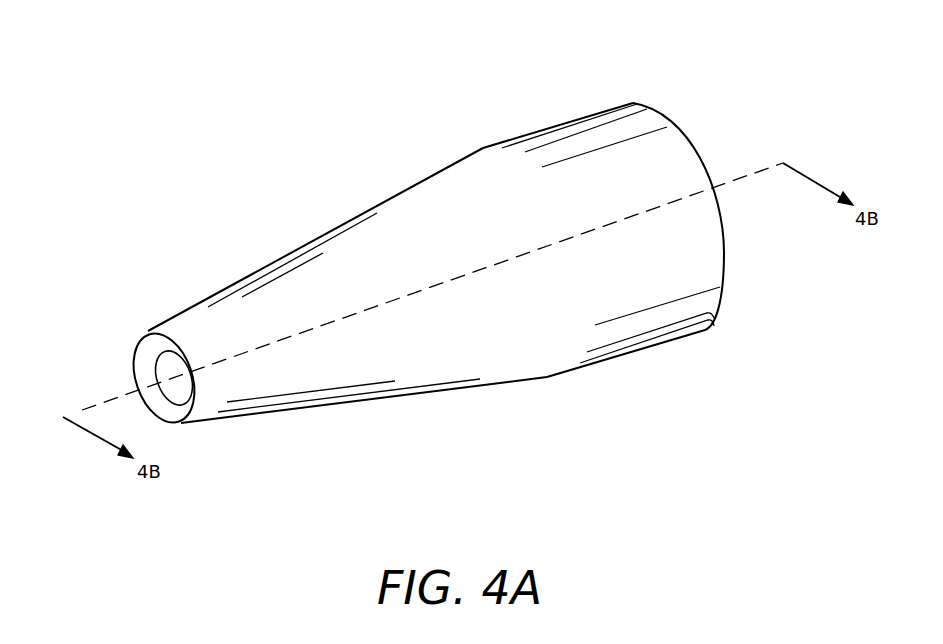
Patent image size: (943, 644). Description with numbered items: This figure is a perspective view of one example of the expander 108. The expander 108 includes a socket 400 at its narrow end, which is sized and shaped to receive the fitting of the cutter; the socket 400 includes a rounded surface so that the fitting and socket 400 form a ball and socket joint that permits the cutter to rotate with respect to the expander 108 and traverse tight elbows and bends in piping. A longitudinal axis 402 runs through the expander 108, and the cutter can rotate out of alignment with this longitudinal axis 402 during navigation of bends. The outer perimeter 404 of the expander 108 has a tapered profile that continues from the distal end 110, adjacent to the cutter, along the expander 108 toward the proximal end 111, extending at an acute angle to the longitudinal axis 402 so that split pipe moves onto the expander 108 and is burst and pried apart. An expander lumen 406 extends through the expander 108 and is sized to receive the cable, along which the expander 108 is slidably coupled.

The expander 108 is at (210, 78).
The distal end 110 is at (184, 320).
The proximal end 111 is at (520, 137).
The socket 400 is at (178, 420).
The longitudinal axis 402 is at (78, 412).
The outer perimeter 404 is at (400, 398).
The expander lumen 406 is at (155, 362).